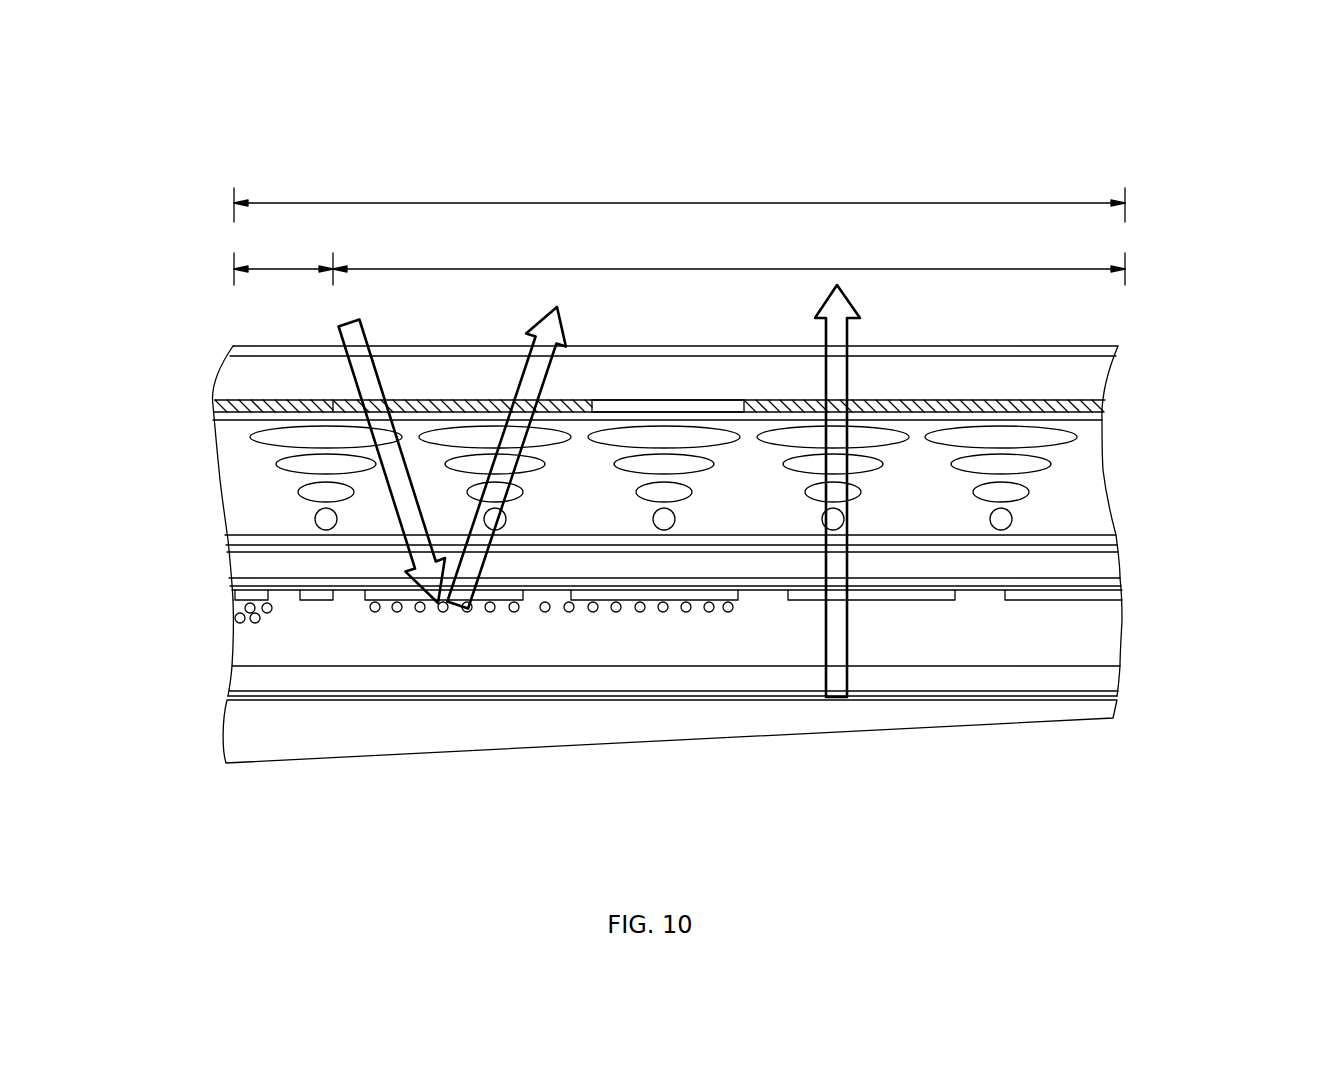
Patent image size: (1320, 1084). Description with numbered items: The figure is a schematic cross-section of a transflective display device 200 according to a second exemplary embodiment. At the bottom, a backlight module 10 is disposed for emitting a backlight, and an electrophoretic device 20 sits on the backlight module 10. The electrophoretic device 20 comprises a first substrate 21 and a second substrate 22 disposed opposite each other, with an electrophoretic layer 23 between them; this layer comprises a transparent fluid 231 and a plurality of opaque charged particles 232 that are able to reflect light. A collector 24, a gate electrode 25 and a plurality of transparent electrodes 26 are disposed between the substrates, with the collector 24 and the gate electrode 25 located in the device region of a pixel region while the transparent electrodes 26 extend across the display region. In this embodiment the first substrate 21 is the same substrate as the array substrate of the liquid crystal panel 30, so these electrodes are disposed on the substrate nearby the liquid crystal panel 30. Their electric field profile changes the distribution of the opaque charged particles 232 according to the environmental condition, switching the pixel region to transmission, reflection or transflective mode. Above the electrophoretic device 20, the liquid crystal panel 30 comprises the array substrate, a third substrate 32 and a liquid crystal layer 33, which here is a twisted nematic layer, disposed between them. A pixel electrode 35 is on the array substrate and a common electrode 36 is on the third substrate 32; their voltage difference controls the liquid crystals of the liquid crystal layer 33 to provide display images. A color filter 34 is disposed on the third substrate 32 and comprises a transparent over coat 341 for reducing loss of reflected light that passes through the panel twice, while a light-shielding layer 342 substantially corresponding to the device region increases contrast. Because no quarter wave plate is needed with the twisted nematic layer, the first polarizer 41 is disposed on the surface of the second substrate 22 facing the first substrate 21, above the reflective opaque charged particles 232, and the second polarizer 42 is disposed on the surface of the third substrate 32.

The transflective display device 200 is at (1175, 168).
The backlight module 10 is at (208, 698).
The electrophoretic device 20 is at (162, 568).
The first substrate 21 is at (1120, 566).
The second substrate 22 is at (1113, 679).
The electrophoretic layer 23 is at (1123, 612).
The transparent fluid 231 is at (1115, 644).
The opaque charged particles 232 is at (232, 623).
The collector 24 is at (234, 597).
The gate electrode 25 is at (320, 601).
The transparent electrodes 26 is at (388, 597).
The liquid crystal panel 30 is at (162, 390).
The third substrate 32 is at (1103, 380).
The liquid crystal layer 33 is at (1103, 472).
The color filter 34 is at (1105, 403).
The over coat 341 is at (663, 405).
The light-shielding layer 342 is at (271, 400).
The pixel electrode 35 is at (1117, 540).
The common electrode 36 is at (1102, 421).
The first polarizer 41 is at (1122, 586).
The second polarizer 42 is at (1118, 347).